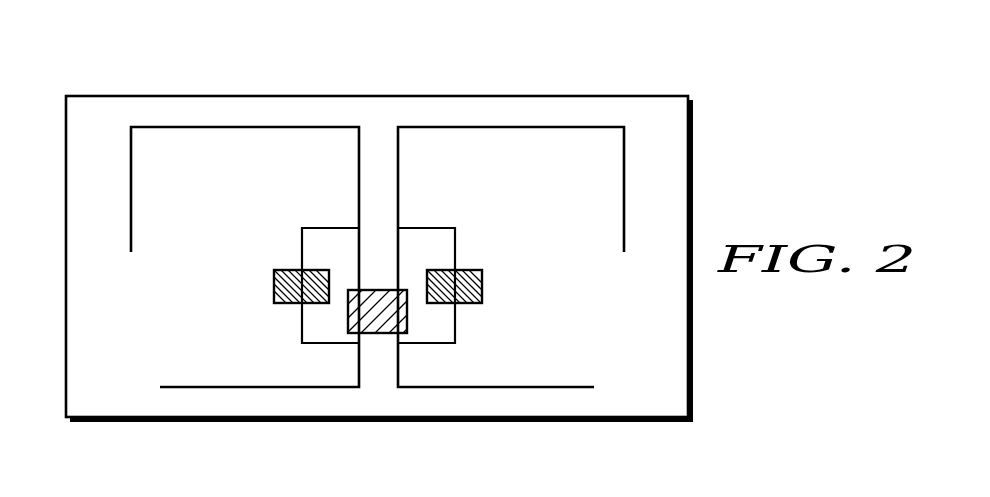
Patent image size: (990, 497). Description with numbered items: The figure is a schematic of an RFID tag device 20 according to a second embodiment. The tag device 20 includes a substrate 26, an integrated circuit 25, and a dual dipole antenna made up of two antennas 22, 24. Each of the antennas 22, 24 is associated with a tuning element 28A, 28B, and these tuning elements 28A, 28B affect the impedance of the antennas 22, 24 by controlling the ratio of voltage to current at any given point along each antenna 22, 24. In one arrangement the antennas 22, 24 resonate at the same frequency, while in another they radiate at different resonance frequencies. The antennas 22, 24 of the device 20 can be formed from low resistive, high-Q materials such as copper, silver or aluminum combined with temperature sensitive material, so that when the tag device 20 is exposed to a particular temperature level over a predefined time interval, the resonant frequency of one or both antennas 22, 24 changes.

The RFID tag device 20 is at (397, 64).
The antenna 22 is at (243, 127).
The antenna 24 is at (510, 127).
The integrated circuit 25 is at (375, 333).
The substrate 26 is at (663, 96).
The tuning element 28A is at (274, 288).
The tuning element 28B is at (482, 285).